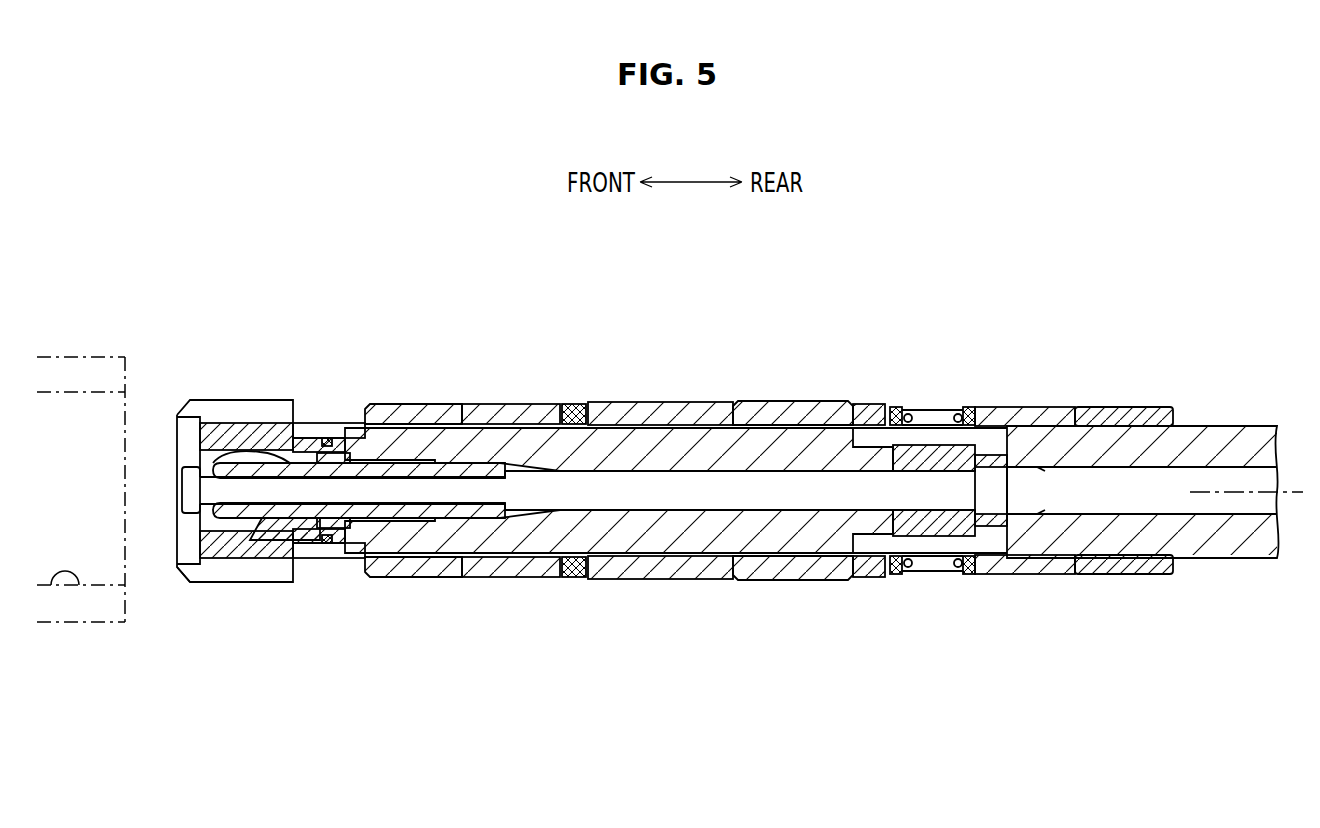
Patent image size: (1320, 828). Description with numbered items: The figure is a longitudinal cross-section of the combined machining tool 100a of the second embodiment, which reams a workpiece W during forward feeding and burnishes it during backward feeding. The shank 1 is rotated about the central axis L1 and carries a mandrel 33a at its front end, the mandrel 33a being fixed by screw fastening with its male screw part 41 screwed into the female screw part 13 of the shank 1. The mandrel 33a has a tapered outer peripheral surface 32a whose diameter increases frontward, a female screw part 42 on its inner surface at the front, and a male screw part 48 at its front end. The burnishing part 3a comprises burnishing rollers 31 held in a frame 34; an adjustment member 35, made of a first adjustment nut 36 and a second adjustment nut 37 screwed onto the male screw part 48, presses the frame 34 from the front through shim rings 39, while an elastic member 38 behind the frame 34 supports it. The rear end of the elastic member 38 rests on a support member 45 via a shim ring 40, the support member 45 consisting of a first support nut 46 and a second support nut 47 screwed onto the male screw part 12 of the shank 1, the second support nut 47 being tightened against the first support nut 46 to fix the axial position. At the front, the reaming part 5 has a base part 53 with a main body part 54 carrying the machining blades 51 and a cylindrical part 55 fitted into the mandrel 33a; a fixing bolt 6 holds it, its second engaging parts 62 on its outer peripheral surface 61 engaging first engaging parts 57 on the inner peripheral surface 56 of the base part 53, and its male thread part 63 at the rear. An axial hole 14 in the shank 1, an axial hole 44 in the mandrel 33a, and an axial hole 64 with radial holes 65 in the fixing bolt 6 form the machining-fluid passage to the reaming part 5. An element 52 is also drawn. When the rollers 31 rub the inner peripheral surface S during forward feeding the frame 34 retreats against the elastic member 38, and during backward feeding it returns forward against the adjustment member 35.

The shank 1 is at (1243, 348).
The combined machining tool 100a is at (1070, 240).
The burnishing part 3a is at (677, 338).
The reaming part 5 is at (242, 346).
The fixing bolt 6 is at (174, 508).
The male screw part 12 is at (1190, 424).
The female screw part 13 is at (995, 525).
The axial hole 14 is at (1157, 505).
The burnishing rollers 31 is at (813, 400).
The outer peripheral surface 32a is at (772, 400).
The mandrel 33a is at (713, 400).
The frame 34 is at (637, 400).
The adjustment member 35 is at (502, 349).
The first adjustment nut 36 is at (497, 405).
The second adjustment nut 37 is at (437, 405).
The elastic member 38 is at (952, 402).
The shim rings 39 is at (576, 580).
The shim ring 40 is at (893, 578).
The male screw part 41 is at (947, 530).
The female screw part 42 is at (453, 517).
The axial hole 44 is at (710, 497).
The support member 45 is at (1108, 350).
The first support nut 46 is at (1044, 405).
The second support nut 47 is at (1103, 405).
The male screw part 48 is at (330, 432).
The machining blades 51 is at (183, 408).
The lower flange 52 is at (306, 570).
The base part 53 is at (323, 354).
The main body part 54 is at (268, 440).
The cylindrical part 55 is at (310, 420).
The inner peripheral surface 56 is at (250, 455).
The first engaging parts 57 is at (266, 545).
The outer peripheral surface 61 is at (290, 486).
The second engaging parts 62 is at (250, 532).
The male thread part 63 is at (400, 527).
The axial hole 64 is at (488, 495).
The radial holes 65 is at (183, 566).
The central axis L1 is at (1215, 493).
The inner peripheral surface S is at (80, 590).
The workpiece W is at (106, 356).